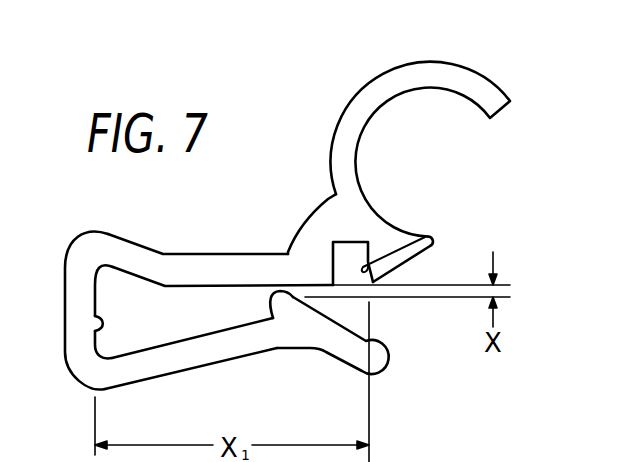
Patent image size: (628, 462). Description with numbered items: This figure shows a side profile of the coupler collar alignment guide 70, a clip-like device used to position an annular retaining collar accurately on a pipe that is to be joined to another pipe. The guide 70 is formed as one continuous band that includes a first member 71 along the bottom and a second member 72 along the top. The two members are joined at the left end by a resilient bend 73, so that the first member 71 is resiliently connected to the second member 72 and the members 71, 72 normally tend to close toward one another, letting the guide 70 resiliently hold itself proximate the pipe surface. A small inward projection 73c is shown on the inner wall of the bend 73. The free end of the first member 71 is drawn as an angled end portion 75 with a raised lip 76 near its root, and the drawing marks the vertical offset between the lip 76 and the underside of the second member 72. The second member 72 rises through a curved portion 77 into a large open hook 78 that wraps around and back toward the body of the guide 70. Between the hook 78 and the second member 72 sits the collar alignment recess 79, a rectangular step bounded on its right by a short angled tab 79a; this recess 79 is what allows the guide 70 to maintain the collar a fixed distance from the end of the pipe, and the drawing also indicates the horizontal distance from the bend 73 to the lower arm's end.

The coupler collar alignment guide 70 is at (329, 109).
The first member 71 is at (157, 367).
The second member 72 is at (208, 250).
The bend 73 is at (68, 302).
The projection 73c is at (107, 327).
The end portion 75 is at (377, 343).
The lip 76 is at (279, 294).
The curved portion 77 is at (332, 210).
The hook 78 is at (465, 73).
The collar alignment recess 79 is at (353, 247).
The tab 79a is at (423, 237).